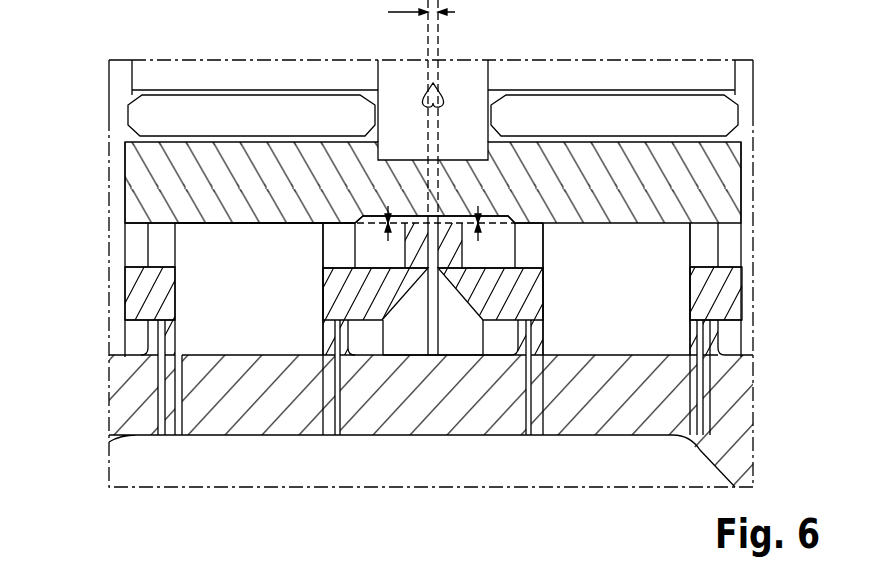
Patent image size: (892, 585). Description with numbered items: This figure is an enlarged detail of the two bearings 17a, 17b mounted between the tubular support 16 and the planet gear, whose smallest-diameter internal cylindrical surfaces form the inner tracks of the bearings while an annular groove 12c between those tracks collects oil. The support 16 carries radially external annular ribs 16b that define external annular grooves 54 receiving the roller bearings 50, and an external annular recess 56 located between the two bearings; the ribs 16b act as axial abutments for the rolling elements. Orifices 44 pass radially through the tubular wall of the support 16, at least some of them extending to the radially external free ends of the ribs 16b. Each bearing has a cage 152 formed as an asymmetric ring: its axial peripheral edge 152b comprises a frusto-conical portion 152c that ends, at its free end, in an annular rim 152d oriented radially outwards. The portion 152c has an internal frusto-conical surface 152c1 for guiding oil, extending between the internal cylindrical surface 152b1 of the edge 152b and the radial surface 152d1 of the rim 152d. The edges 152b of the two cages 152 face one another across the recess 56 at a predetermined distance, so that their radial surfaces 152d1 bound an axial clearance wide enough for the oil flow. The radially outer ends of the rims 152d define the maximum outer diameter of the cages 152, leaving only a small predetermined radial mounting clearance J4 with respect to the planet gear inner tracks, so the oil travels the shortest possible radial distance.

The annular groove 12c is at (480, 152).
The support 16 is at (459, 412).
The radially external annular ribs 16b is at (490, 350).
The bearing 17a is at (193, 230).
The bearing 17b is at (673, 258).
The orifices 44 is at (330, 455).
The roller bearings 50 is at (193, 263).
The external annular grooves 54 is at (240, 355).
The external annular recess 56 is at (417, 342).
The cage 152 is at (316, 246).
The axial peripheral edge 152b is at (343, 292).
The internal cylindrical surface 152b1 is at (380, 322).
The frusto-conical portion 152c is at (400, 280).
The internal frusto-conical surface 152c1 is at (402, 303).
The annular rim 152d is at (424, 212).
The radial surface 152d1 is at (451, 215).
The radial mounting clearance J4 is at (388, 210).